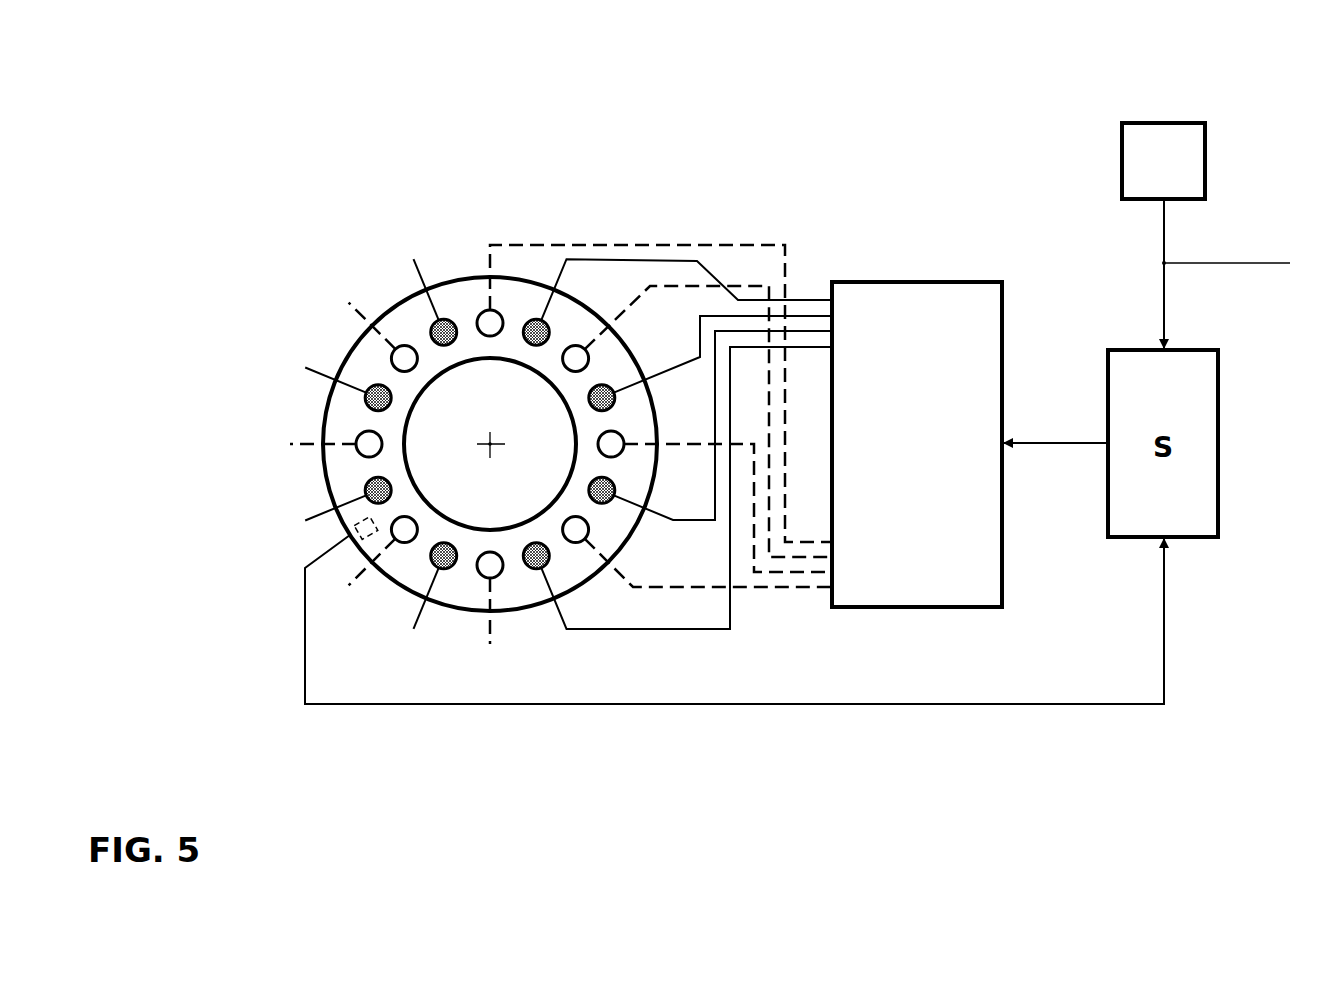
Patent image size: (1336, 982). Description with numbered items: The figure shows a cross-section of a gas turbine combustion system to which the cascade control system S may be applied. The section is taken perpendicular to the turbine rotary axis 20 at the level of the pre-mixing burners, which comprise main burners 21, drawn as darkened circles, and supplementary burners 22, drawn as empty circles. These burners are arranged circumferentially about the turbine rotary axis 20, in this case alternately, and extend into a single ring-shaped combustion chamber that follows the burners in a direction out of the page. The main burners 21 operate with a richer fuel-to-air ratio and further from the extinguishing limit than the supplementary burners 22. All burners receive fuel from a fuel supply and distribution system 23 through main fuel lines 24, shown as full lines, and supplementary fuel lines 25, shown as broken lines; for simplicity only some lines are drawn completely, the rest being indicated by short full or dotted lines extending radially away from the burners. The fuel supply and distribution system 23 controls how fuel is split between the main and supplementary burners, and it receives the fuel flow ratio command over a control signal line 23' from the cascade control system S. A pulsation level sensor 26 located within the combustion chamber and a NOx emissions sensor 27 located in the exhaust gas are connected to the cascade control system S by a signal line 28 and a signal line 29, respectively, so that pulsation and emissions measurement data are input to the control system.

The turbine rotary axis 20 is at (490, 444).
The main burners 21 is at (444, 332).
The supplementary burners 22 is at (490, 323).
The fuel supply and distribution system 23 is at (917, 444).
The control signal line 23' is at (1056, 323).
The main fuel lines 24 is at (797, 329).
The supplementary fuel lines 25 is at (819, 587).
The pulsation level sensor 26 is at (363, 523).
The NOx emissions sensor 27 is at (1163, 235).
The signal line 28 is at (532, 704).
The signal line 29 is at (1249, 263).